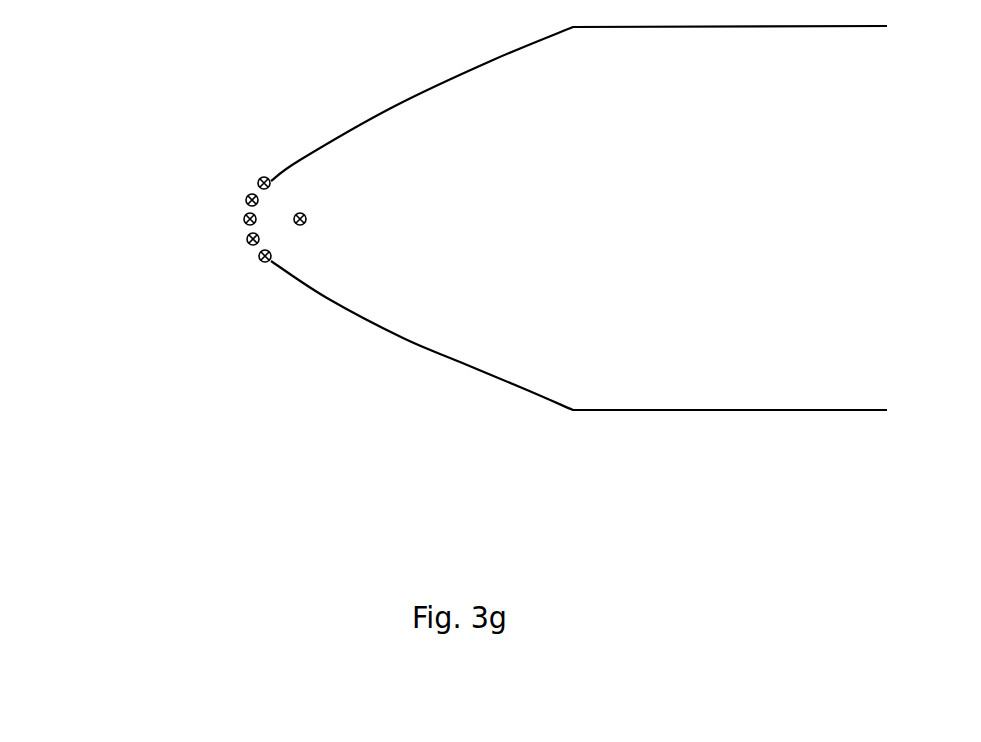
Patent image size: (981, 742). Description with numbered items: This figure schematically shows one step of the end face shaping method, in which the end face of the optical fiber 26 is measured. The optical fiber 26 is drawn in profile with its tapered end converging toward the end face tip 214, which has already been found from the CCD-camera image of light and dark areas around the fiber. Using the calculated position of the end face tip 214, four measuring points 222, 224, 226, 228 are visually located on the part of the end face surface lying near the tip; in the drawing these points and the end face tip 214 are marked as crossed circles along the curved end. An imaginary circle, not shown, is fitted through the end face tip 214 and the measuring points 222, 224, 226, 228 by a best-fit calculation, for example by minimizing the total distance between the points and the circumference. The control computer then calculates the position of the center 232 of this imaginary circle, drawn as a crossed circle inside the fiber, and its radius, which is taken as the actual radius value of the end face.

The optical fiber 26 is at (417, 323).
The end face tip 214 is at (244, 220).
The measuring point 222 is at (257, 184).
The measuring point 224 is at (246, 201).
The measuring point 226 is at (248, 241).
The measuring point 228 is at (261, 260).
The center of the imaginary circle 232 is at (299, 213).